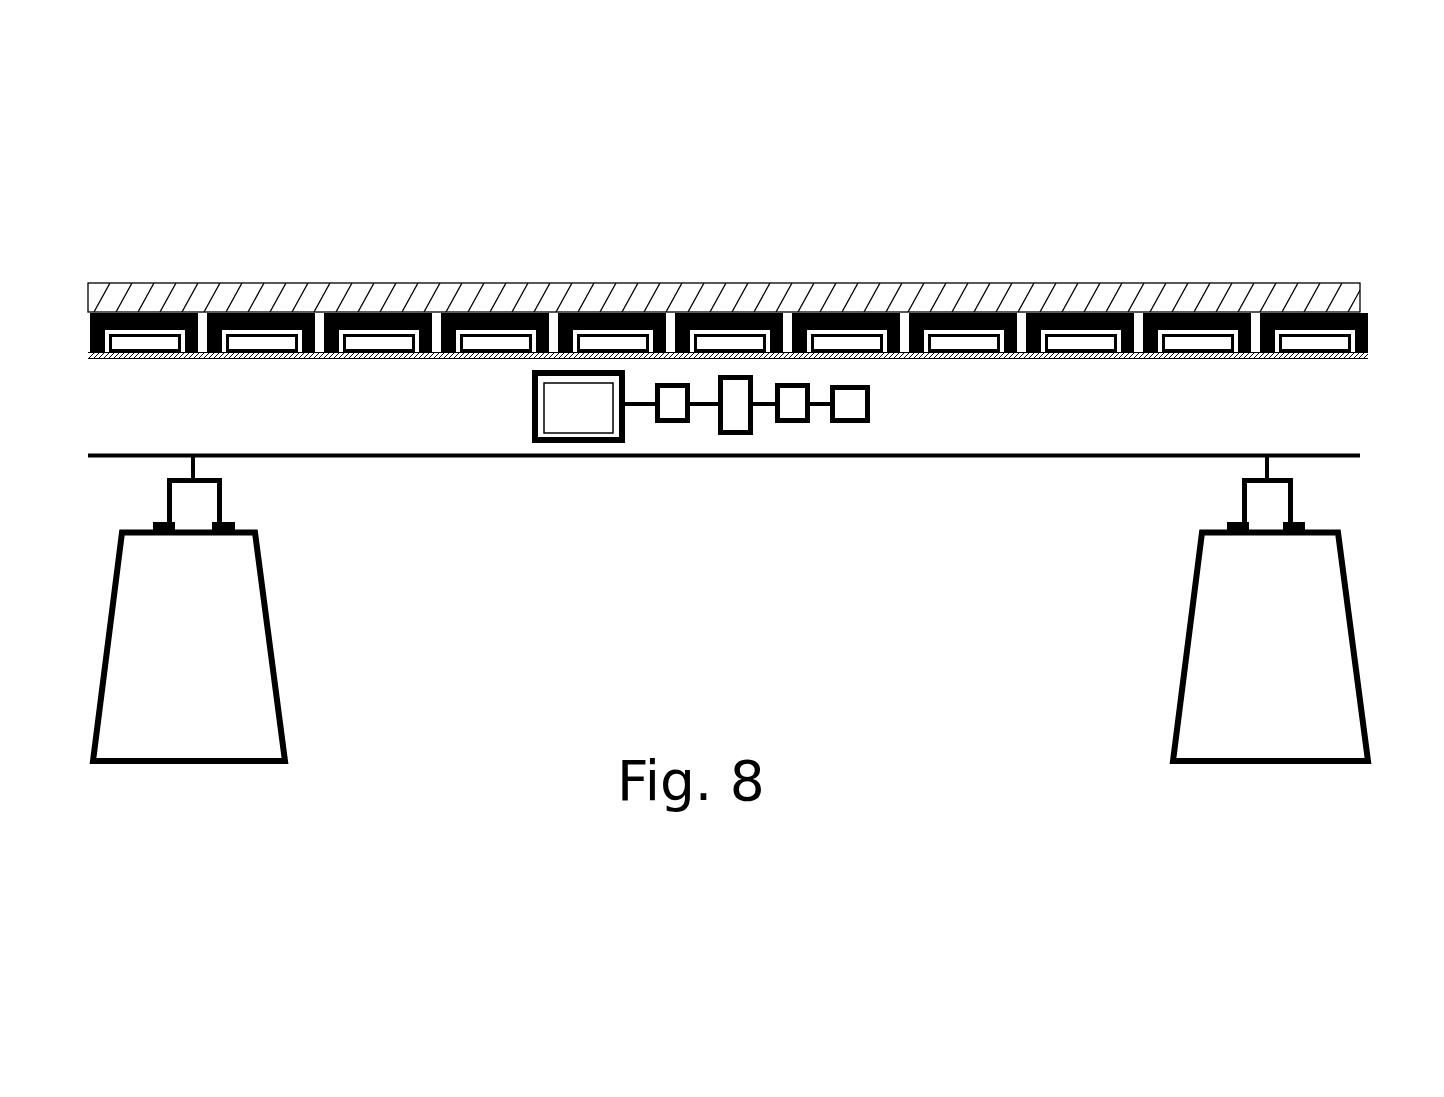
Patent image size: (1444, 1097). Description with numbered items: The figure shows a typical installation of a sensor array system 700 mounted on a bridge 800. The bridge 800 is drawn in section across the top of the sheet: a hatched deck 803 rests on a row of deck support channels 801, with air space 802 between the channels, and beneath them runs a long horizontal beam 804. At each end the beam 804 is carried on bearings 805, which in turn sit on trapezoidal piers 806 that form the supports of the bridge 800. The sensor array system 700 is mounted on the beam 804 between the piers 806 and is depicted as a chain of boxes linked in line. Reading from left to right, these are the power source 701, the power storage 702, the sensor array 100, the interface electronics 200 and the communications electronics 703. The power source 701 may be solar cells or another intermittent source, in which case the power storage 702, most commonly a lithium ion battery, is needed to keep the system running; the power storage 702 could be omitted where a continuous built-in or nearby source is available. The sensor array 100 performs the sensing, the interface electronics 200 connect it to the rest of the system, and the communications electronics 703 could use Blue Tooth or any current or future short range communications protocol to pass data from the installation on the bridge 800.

The bridge 800 is at (262, 163).
The deck support channels 801 is at (729, 275).
The air space 802 is at (658, 273).
The deck 803 is at (1155, 303).
The beam 804 is at (1055, 428).
The bearings 805 is at (218, 480).
The piers 806 is at (222, 644).
The sensor array system 700 is at (699, 543).
The power source 701 is at (555, 413).
The power storage 702 is at (673, 412).
The sensor array 100 is at (738, 415).
The interface electronics 200 is at (795, 410).
The communications electronics 703 is at (866, 400).